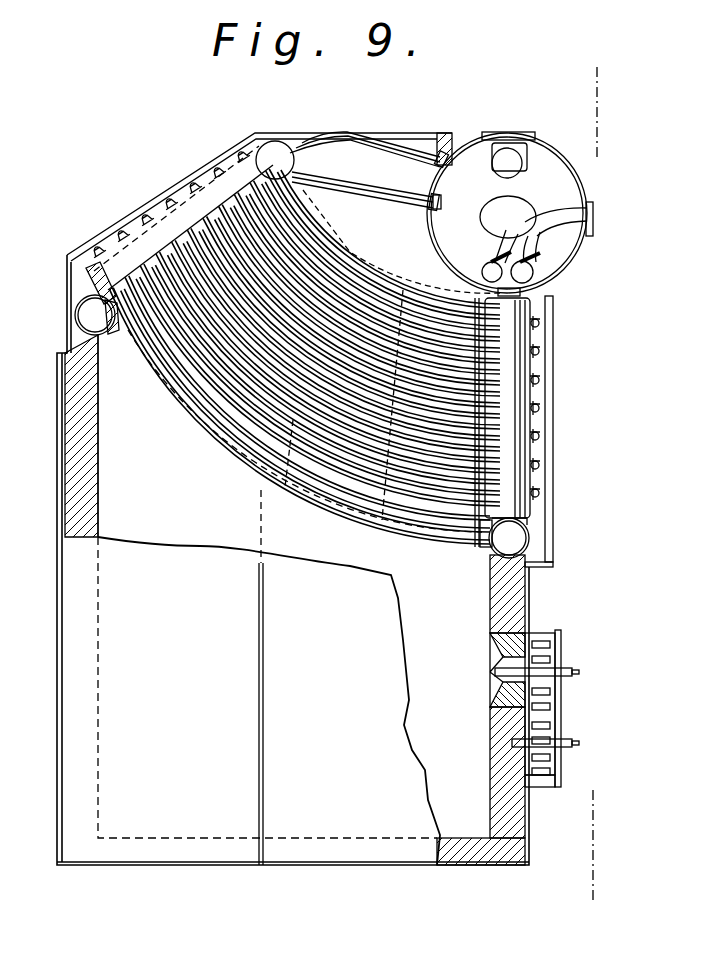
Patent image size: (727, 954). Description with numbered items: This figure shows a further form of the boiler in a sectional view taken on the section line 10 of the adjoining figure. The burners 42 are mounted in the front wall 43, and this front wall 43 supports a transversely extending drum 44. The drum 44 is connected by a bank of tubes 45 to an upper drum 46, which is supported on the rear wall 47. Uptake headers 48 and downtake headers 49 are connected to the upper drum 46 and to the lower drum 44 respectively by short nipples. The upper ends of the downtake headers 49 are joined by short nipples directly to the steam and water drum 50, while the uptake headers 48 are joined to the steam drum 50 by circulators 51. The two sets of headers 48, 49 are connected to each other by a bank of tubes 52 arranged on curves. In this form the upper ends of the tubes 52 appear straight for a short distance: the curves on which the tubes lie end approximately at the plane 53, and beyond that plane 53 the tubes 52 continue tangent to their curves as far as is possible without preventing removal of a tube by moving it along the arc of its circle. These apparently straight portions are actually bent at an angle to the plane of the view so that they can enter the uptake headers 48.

The Fig. 10 section line 10 is at (597, 67).
The burners 42 is at (550, 660).
The front wall 43 is at (510, 600).
The transversely extending drum 44 is at (515, 540).
The bank of tubes 45 is at (334, 520).
The upper drum 46 is at (92, 318).
The rear wall 47 is at (70, 412).
The uptake headers 48 is at (112, 257).
The downtake headers 49 is at (513, 373).
The steam and water drum 50 is at (563, 196).
The circulators 51 is at (376, 185).
The bank of tubes 52 is at (362, 290).
The plane 53 is at (316, 194).